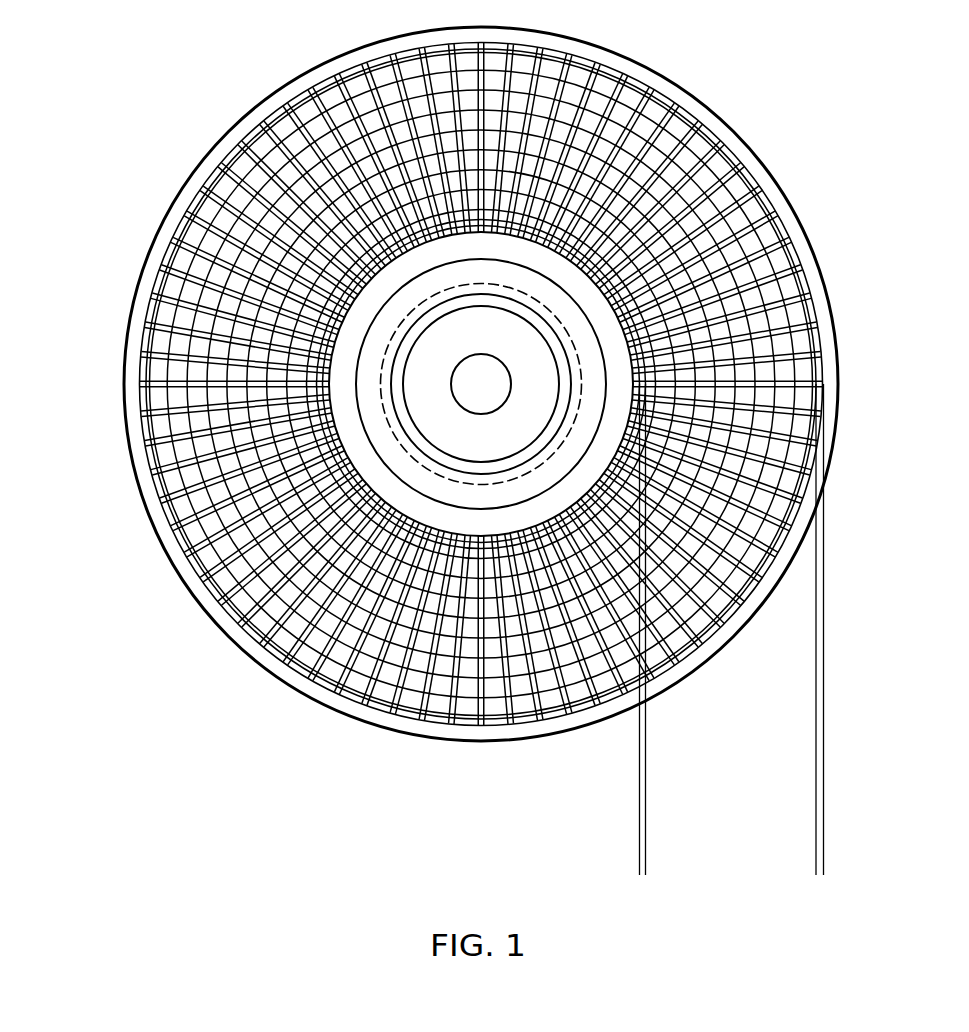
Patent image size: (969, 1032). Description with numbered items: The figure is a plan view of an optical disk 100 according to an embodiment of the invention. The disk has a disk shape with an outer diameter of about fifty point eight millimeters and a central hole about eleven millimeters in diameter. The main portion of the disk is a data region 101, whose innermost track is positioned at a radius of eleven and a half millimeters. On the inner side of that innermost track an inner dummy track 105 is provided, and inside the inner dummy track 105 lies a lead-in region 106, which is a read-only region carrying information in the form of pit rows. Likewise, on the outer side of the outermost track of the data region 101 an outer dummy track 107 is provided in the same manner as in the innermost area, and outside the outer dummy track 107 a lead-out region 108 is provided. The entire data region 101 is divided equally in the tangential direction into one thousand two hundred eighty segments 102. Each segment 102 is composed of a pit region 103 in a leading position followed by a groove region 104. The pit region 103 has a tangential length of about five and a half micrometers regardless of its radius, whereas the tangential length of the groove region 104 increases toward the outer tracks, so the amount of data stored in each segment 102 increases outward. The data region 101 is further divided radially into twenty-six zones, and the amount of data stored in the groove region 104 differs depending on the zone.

The optical disc 100 is at (227, 142).
The data region 101 is at (816, 753).
The segment 102 is at (424, 384).
The pit region 103 is at (205, 538).
The groove region 104 is at (220, 592).
The inner dummy track 105 is at (678, 811).
The lead-in region 106 is at (678, 854).
The outer dummy track 107 is at (782, 811).
The lead-out region 108 is at (782, 854).